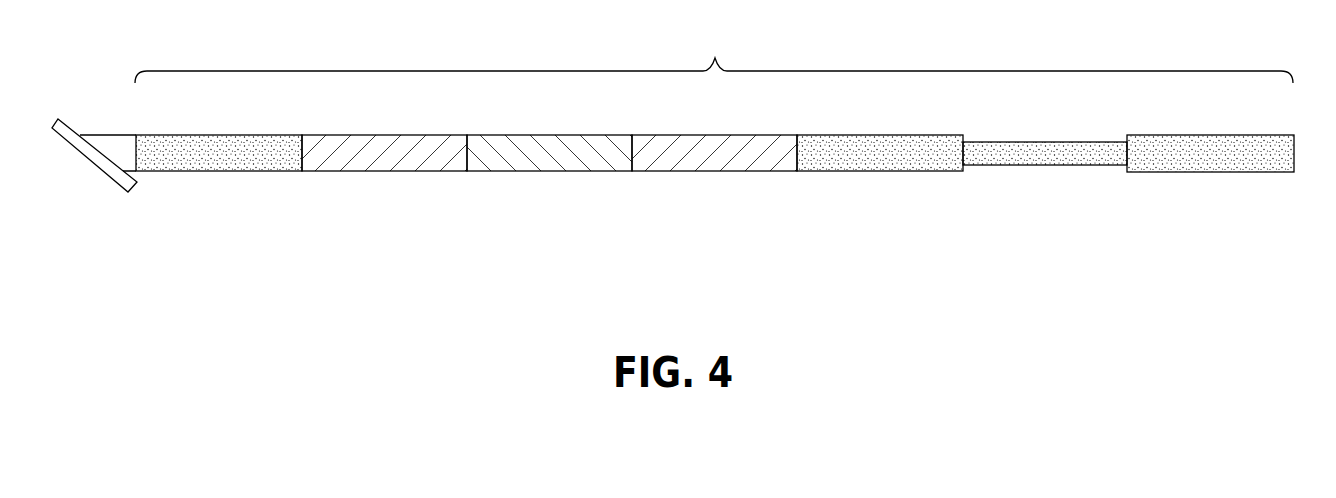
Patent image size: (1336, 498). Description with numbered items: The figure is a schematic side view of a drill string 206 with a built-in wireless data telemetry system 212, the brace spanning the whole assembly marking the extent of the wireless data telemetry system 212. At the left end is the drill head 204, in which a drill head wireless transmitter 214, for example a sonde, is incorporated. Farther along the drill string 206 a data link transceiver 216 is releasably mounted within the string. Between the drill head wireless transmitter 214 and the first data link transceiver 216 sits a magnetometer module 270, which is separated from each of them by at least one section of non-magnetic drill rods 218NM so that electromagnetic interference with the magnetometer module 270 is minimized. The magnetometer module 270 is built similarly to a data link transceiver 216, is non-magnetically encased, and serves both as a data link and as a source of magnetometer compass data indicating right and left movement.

The wireless data telemetry system 212 is at (714, 55).
The drill head 204 is at (88, 182).
The drill head wireless transmitter 214 is at (222, 171).
The non-magnetic drill rods 218NM is at (383, 171).
The magnetometer module 270 is at (548, 171).
The drill string 206 is at (647, 212).
The data link transceiver 216 is at (1045, 165).